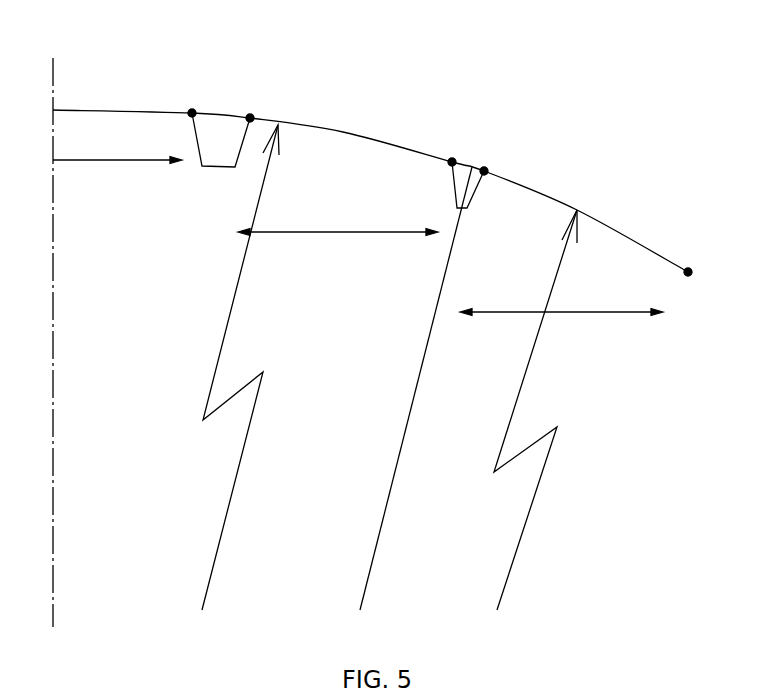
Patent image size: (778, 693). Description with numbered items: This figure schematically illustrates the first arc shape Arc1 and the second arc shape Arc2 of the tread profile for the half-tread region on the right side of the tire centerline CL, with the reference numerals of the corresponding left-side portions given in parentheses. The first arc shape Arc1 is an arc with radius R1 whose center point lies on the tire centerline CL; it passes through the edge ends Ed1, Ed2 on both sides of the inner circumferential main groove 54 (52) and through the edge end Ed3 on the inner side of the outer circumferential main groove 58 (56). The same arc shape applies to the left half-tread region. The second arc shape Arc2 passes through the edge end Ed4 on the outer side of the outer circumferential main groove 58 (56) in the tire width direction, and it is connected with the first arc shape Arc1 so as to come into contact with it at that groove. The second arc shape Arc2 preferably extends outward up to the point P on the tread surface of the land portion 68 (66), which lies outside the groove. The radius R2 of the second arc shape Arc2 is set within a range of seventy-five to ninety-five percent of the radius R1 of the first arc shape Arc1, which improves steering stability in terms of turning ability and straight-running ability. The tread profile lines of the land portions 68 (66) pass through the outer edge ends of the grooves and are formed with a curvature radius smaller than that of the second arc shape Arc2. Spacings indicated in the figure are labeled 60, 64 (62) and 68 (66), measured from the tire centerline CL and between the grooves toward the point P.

The circumferential main groove 52 is at (218, 132).
The circumferential main groove 54 is at (242, 100).
The circumferential main groove 56 is at (463, 173).
The circumferential main groove 58 is at (496, 137).
The distance from center line to first groove 60 is at (117, 173).
The first interval region 62 is at (338, 244).
The distance between first and second grooves 64 is at (338, 234).
The land portion 66 is at (561, 324).
The land portion 68 is at (561, 314).
The tire centerline CL is at (55, 330).
The edge end Ed1 is at (192, 109).
The edge end Ed2 is at (252, 116).
The edge end Ed3 is at (452, 160).
The edge end Ed4 is at (486, 169).
The first arc shape Arc1 is at (344, 130).
The second arc shape Arc2 is at (650, 243).
The radius of the first arc shape R1 is at (240, 367).
The radius of the second arc shape R2 is at (535, 410).
The point P is at (688, 284).